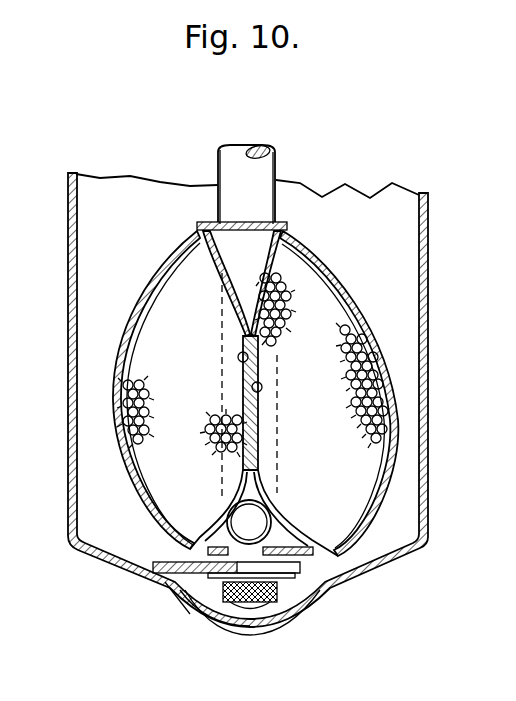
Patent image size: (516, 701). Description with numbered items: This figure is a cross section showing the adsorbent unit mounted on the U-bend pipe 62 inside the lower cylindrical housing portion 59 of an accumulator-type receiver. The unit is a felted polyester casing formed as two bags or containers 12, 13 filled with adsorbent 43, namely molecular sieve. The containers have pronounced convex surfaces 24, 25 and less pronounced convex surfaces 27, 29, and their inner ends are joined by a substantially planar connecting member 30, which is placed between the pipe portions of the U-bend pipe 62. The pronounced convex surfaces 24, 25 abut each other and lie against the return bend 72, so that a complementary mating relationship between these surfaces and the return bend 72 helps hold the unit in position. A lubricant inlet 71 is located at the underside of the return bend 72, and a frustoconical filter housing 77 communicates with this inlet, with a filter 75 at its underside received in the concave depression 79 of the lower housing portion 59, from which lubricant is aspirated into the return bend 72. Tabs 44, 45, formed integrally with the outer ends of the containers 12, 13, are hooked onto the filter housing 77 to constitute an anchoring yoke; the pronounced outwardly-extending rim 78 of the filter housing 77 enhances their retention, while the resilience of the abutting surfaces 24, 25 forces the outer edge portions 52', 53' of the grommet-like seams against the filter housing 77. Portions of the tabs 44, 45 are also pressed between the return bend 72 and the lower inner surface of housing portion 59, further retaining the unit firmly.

The container 12 is at (343, 290).
The container 13 is at (153, 284).
The pronounced convex surface 24 is at (277, 367).
The pronounced convex surface 25 is at (222, 388).
The less pronounced convex surface 27 is at (390, 408).
The less pronounced convex surface 29 is at (128, 336).
The connecting member 30 is at (248, 208).
The adsorbent 43 is at (142, 368).
The tab 44 is at (177, 590).
The tab 45 is at (297, 537).
The outer edge portion of grommet 52' is at (215, 627).
The outer edge portion of grommet 53' is at (286, 592).
The lower cylindrical housing portion 59 is at (67, 208).
The U-bend pipe 62 is at (218, 160).
The lubricant inlet 71 is at (277, 490).
The return bend 72 is at (235, 483).
The filter 75 is at (262, 605).
The filter housing 77 is at (246, 605).
The rim 78 is at (190, 615).
The concave depression 79 is at (310, 618).